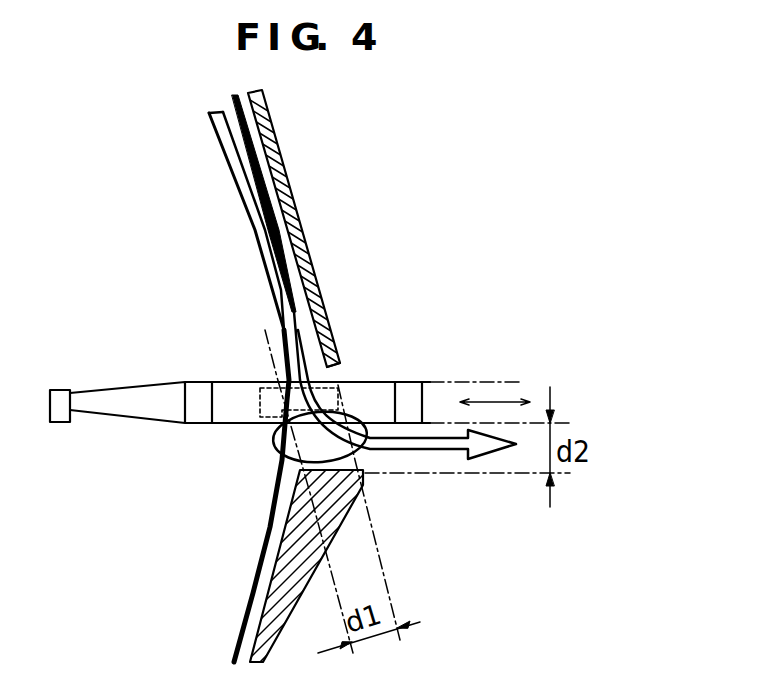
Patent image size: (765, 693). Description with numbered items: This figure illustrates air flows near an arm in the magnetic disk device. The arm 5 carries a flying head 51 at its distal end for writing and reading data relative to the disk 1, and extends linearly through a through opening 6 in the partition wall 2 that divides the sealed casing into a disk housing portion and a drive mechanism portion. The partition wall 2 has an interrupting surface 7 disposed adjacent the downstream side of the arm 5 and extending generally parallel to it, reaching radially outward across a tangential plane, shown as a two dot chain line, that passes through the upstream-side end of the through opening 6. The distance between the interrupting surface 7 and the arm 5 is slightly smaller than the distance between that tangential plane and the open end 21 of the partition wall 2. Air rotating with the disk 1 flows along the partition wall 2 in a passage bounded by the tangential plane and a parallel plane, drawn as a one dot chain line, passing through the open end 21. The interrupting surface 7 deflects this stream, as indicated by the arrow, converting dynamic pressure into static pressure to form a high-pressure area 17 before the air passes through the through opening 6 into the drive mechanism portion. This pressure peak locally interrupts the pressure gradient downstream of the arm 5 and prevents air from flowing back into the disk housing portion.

The disk 1 is at (180, 215).
The partition wall 2 is at (312, 240).
The arm 5 is at (238, 388).
The through opening 6 is at (340, 373).
The interrupting surface 7 is at (355, 462).
The high-pressure area 17 is at (362, 388).
The open end 21 is at (295, 468).
The flying head 51 is at (60, 412).